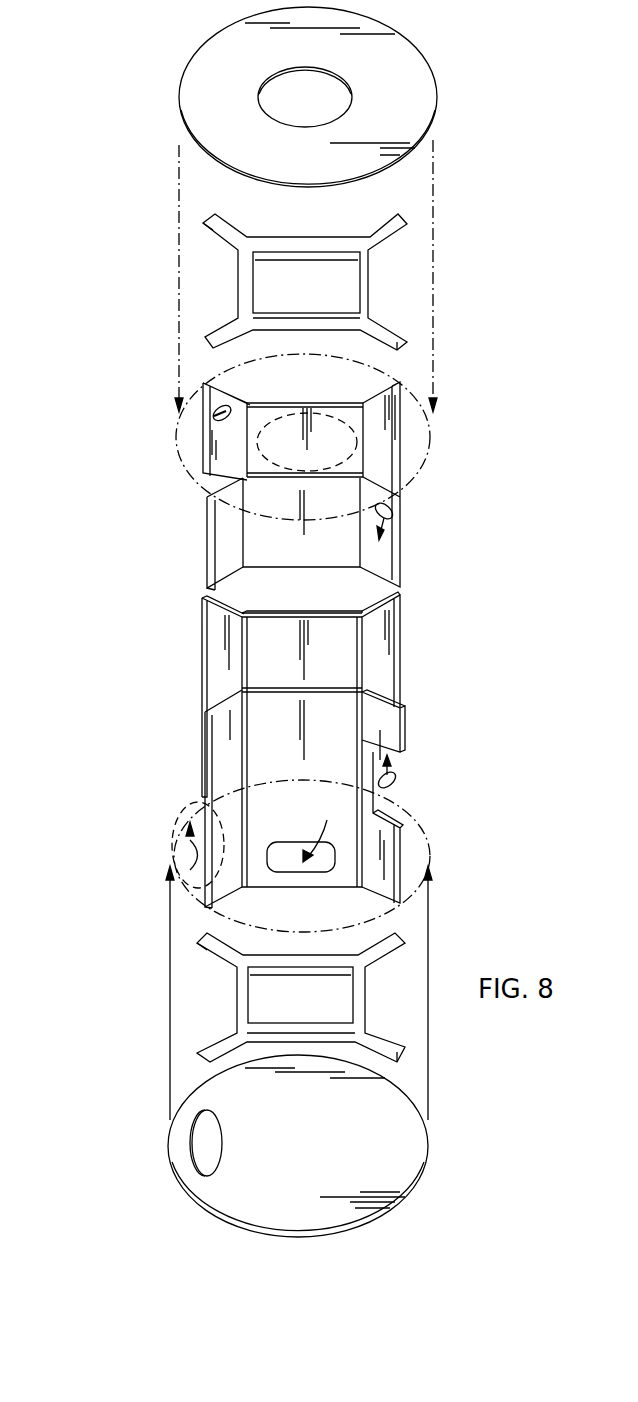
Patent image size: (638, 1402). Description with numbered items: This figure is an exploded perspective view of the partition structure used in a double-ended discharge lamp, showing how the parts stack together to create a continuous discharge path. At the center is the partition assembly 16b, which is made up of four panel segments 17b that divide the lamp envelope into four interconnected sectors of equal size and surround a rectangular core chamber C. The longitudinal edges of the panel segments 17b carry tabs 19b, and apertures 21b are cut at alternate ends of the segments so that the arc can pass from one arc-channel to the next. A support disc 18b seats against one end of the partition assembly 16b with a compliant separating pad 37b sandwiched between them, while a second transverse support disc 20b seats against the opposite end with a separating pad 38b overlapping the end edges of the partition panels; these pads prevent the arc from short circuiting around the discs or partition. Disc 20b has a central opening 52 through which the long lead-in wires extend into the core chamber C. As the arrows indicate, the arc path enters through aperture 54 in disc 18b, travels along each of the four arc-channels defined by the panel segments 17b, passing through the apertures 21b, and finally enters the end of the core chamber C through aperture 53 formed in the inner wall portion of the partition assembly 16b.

The support disc 20b is at (197, 97).
The central opening 52 is at (330, 96).
The separating pad 38b is at (240, 318).
The apertures 21b is at (226, 404).
The tabs 19b is at (208, 526).
The partition assembly 16b is at (196, 624).
The core chamber C is at (280, 650).
The panel segments 17b is at (392, 637).
The support disc 18b is at (408, 815).
The aperture 54 is at (192, 860).
The aperture 53 is at (276, 862).
The separating pad 37b is at (232, 1033).